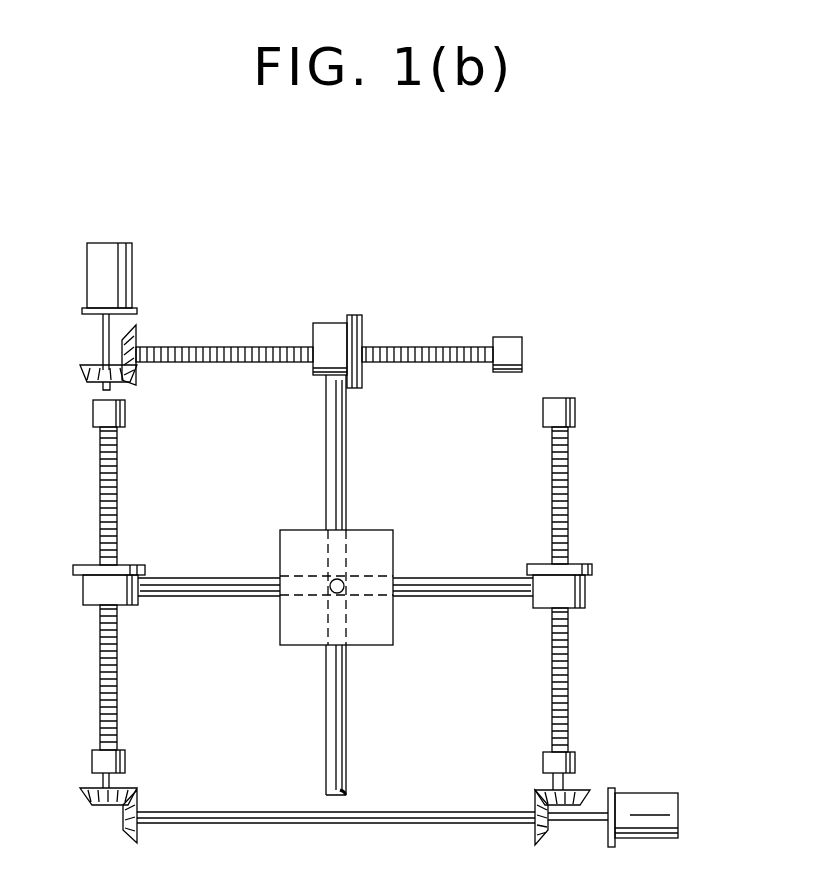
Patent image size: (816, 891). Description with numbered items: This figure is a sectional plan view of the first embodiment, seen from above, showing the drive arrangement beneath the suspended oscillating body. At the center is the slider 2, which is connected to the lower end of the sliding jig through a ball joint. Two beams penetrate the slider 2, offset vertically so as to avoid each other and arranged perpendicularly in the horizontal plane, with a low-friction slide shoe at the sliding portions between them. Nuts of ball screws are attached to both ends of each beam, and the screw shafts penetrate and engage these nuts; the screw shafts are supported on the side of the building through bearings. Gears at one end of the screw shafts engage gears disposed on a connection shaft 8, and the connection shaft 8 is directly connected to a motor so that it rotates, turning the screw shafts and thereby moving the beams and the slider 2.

The slider 2 is at (385, 551).
The connection shaft 8 is at (335, 823).